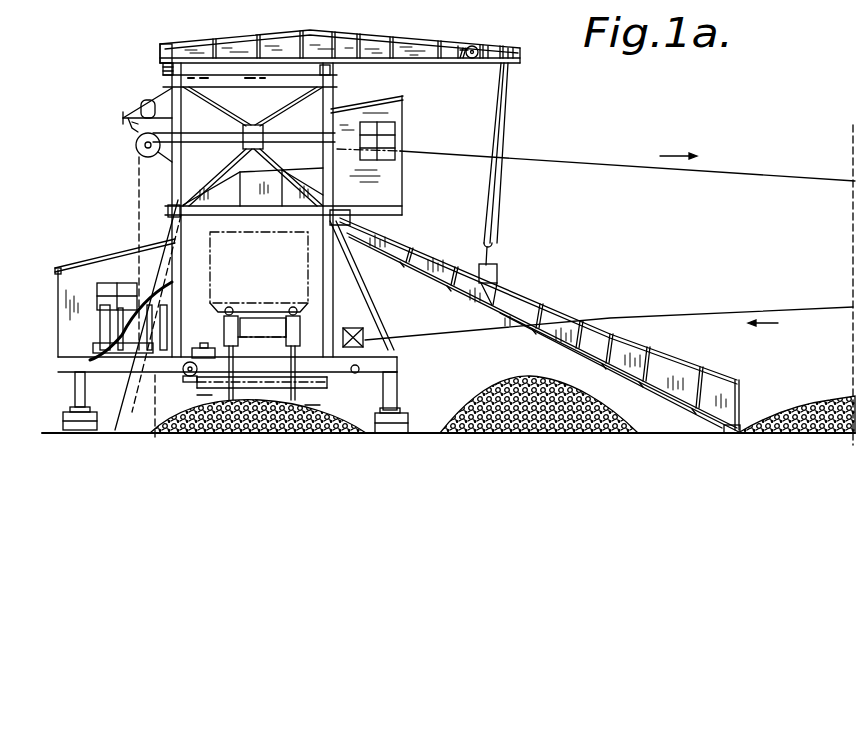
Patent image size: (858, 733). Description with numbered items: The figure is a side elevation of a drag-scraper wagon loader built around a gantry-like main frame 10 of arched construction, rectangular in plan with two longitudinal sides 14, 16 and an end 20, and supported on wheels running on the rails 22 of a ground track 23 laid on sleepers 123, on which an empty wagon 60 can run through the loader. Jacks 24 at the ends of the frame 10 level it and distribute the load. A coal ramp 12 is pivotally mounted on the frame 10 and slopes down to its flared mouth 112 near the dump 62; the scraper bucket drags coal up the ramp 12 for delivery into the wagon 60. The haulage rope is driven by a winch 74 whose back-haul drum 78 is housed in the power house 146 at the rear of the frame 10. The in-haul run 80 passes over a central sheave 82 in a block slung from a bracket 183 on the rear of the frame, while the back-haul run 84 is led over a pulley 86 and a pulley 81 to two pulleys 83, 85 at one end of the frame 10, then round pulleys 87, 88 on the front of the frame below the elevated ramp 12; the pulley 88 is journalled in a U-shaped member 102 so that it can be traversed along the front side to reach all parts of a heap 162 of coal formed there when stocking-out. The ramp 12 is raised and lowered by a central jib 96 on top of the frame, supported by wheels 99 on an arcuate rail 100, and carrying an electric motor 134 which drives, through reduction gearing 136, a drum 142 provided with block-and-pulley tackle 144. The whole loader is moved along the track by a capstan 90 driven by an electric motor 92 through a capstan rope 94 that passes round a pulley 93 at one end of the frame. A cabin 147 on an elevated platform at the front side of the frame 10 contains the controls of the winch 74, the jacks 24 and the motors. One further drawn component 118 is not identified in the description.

The main frame 10 is at (151, 45).
The girder end support 118 is at (163, 62).
The pulley 86 is at (146, 105).
The bracket 183 is at (128, 107).
The central sheave 82 is at (137, 143).
The longitudinal side 14 is at (180, 183).
The pulley 81 is at (170, 212).
The power house 146 is at (83, 267).
The arcuate rail 100 is at (307, 77).
The wheels 99 is at (331, 73).
The central jib 96 is at (400, 33).
The reduction gearing 136 is at (492, 46).
The drum 142 is at (514, 44).
The electric motor 134 is at (461, 62).
The block-and-pulley tackle 144 is at (498, 106).
The U-shaped member 102 is at (512, 127).
The cabin 147 is at (403, 118).
The in-haul run 80 is at (649, 169).
The wagon 60 is at (213, 250).
The longitudinal side 16 is at (323, 279).
The coal ramp 12 is at (540, 298).
The back-haul run 84 is at (682, 310).
The pulley 93 is at (197, 348).
The pulley 88 is at (362, 335).
The pulley 87 is at (384, 342).
The pulley 85 is at (357, 374).
The jacks 24 is at (76, 397).
The back-haul drum 78 is at (128, 390).
The winch 74 is at (130, 397).
The electric motor 92 is at (156, 418).
The capstan 90 is at (160, 434).
The end 20 is at (180, 400).
The pulley 83 is at (191, 378).
The capstan rope 94 is at (206, 400).
The rails 22 is at (282, 405).
The sleepers 123 is at (312, 408).
The ground track 23 is at (343, 434).
The heap 162 is at (473, 400).
The mouth 112 is at (741, 403).
The dump 62 is at (827, 408).